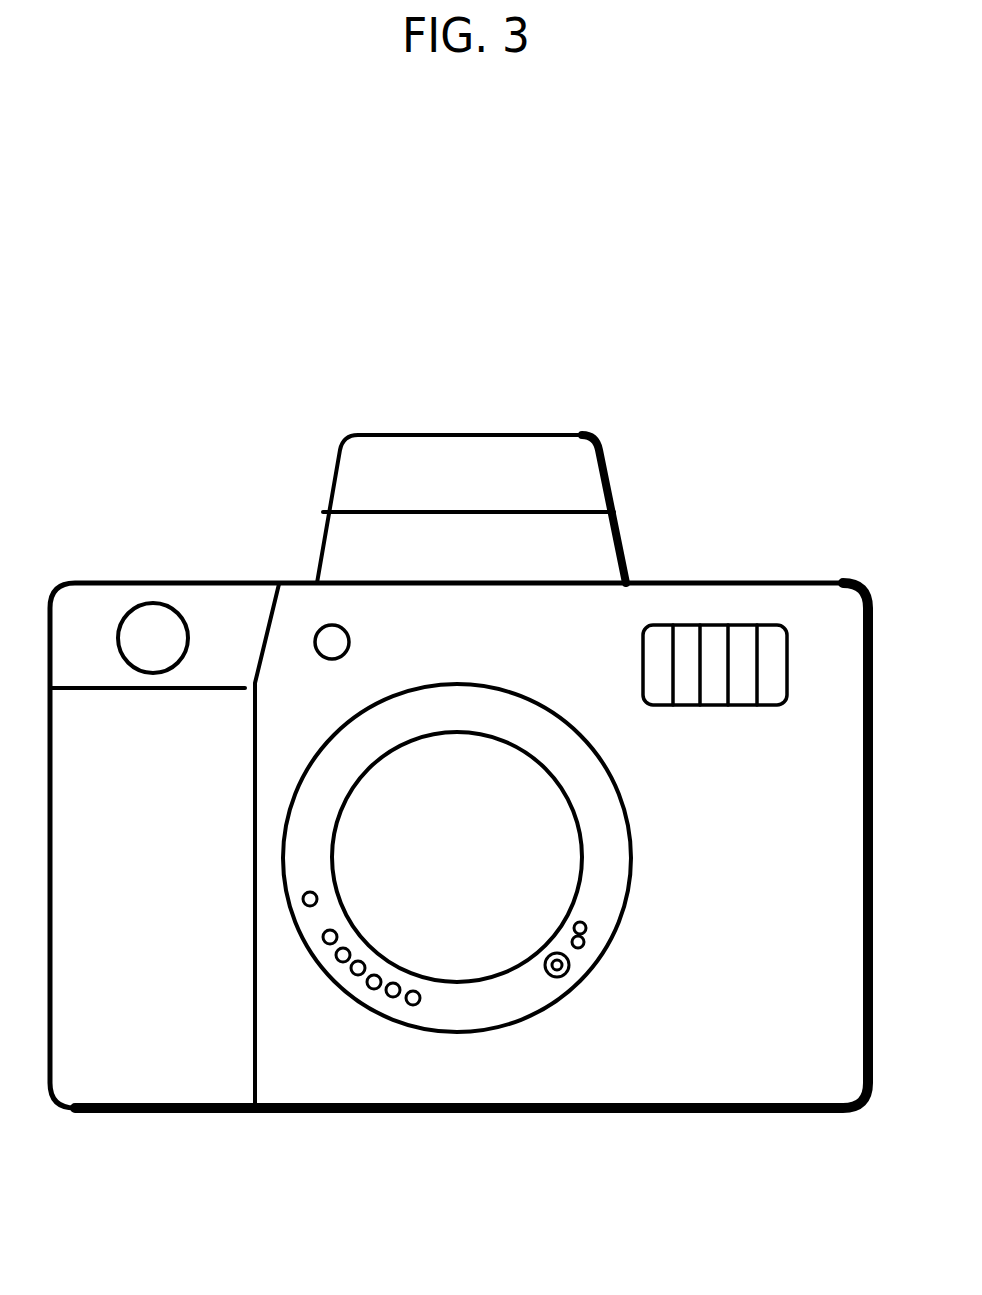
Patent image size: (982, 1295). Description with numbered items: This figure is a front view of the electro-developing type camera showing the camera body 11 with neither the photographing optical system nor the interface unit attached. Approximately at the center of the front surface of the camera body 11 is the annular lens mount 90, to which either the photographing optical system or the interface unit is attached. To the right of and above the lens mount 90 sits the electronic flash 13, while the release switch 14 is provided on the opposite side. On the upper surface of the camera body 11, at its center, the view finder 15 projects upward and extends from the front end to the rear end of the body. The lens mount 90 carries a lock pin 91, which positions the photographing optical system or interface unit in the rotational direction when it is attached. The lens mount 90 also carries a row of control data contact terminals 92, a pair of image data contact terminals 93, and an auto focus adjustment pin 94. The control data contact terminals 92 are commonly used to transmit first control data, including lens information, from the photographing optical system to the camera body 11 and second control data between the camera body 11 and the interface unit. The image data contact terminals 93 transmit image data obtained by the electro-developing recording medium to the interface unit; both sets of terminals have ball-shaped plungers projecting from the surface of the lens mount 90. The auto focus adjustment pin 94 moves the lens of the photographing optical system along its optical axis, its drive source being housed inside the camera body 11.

The camera body 11 is at (673, 1115).
The electronic flash 13 is at (740, 625).
The release switch 14 is at (148, 627).
The view finder 15 is at (470, 473).
The lens mount 90 is at (635, 855).
The lock pin 91 is at (302, 903).
The control data contact terminals 92 is at (326, 943).
The image data contact terminals 93 is at (587, 926).
The auto focus adjustment pin 94 is at (553, 978).